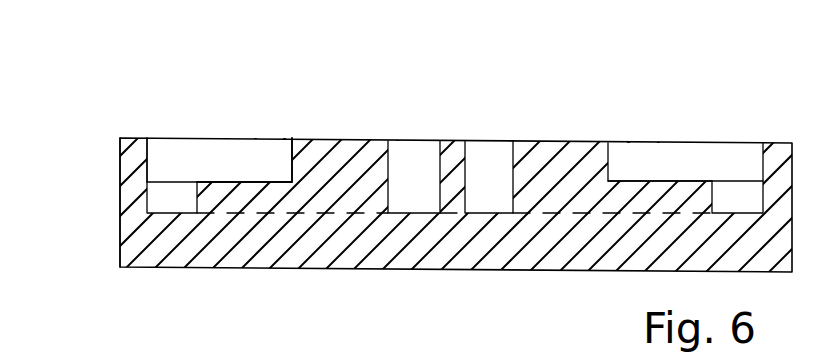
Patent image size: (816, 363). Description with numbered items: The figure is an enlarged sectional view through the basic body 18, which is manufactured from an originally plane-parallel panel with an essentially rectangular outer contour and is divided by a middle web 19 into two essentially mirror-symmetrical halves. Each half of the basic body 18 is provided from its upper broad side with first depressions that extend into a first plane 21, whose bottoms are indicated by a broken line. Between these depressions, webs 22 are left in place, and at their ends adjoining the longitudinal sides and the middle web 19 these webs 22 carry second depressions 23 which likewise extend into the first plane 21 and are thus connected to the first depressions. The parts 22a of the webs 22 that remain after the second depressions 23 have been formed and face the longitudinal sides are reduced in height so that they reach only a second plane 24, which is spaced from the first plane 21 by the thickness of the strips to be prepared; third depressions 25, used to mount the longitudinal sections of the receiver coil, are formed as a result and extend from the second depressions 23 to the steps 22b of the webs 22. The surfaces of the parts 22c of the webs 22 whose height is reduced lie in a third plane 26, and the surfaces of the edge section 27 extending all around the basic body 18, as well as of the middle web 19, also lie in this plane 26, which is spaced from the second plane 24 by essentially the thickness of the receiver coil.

The basic body 18 is at (428, 271).
The middle web 19 is at (450, 162).
The first plane 21 is at (736, 213).
The webs 22 is at (331, 139).
The parts of the webs 22a is at (212, 200).
The steps of the webs 22b is at (292, 156).
The parts of the webs 22c is at (368, 160).
The second depressions 23 is at (162, 196).
The second plane 24 is at (657, 181).
The third depressions 25 is at (250, 165).
The third plane 26 is at (577, 144).
The edge section 27 is at (130, 163).